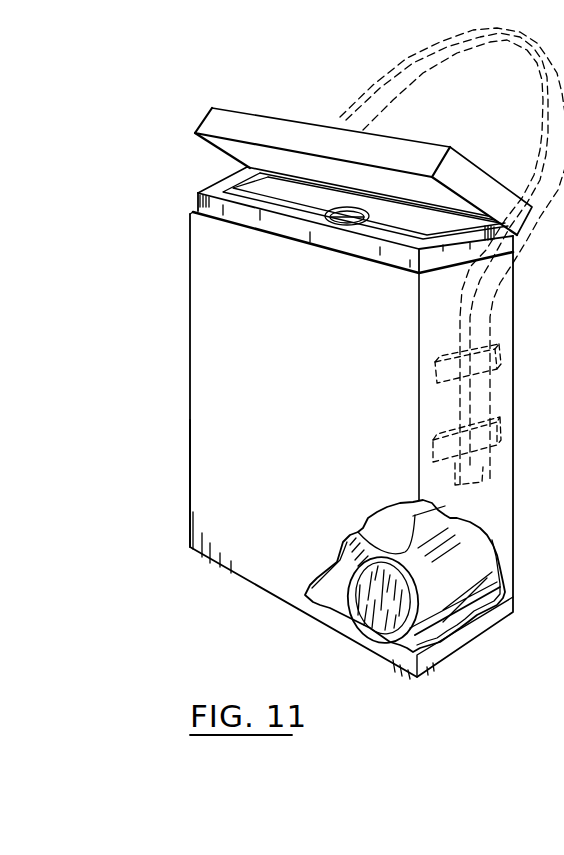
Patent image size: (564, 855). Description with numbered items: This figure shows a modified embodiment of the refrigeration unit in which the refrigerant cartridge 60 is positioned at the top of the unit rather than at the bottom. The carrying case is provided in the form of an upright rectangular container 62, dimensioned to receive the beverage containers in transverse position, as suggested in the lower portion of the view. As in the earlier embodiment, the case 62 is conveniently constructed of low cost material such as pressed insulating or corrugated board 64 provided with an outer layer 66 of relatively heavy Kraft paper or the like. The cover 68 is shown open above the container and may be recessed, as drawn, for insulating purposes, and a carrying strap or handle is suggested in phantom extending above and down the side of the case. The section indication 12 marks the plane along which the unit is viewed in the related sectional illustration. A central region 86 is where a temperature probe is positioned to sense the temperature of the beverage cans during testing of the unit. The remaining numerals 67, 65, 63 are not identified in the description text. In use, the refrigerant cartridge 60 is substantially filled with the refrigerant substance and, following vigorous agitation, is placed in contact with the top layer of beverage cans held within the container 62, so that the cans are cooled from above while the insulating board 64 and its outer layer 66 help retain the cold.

The section line 12 is at (462, 693).
The refrigerant cartridge 60 is at (403, 230).
The upright rectangular container 62 is at (197, 432).
The pressed insulating or corrugated board 64 is at (197, 196).
The outer layer 66 is at (200, 297).
The cover 68 is at (262, 122).
The strap 67 is at (452, 256).
The upper loop 65 is at (499, 322).
The lower loop 63 is at (498, 447).
The central region 86 is at (434, 576).